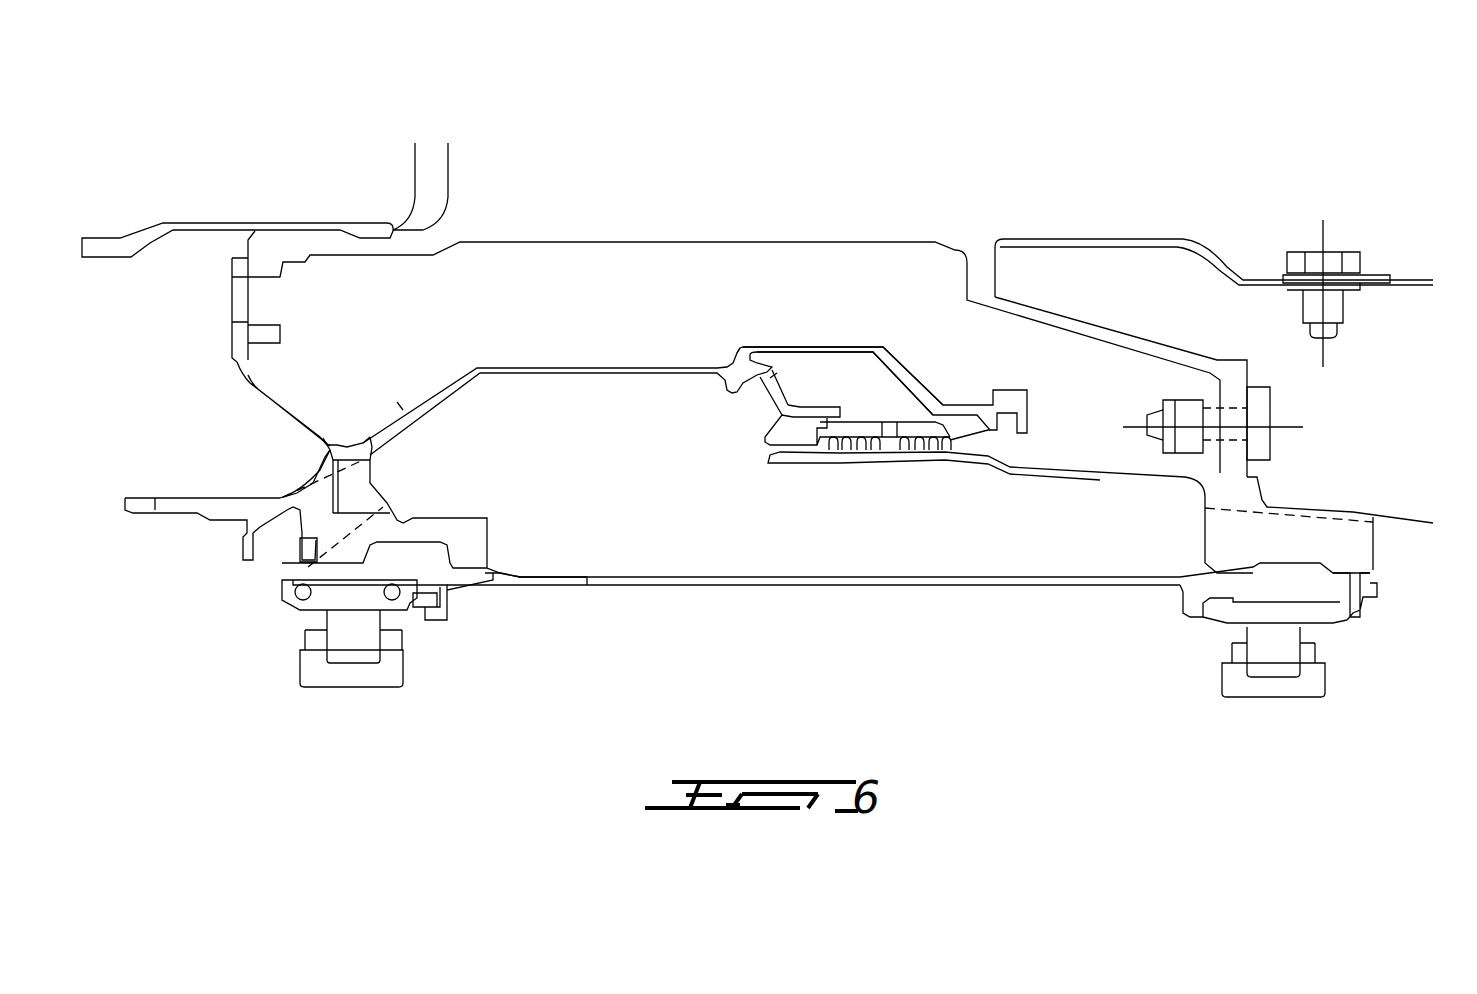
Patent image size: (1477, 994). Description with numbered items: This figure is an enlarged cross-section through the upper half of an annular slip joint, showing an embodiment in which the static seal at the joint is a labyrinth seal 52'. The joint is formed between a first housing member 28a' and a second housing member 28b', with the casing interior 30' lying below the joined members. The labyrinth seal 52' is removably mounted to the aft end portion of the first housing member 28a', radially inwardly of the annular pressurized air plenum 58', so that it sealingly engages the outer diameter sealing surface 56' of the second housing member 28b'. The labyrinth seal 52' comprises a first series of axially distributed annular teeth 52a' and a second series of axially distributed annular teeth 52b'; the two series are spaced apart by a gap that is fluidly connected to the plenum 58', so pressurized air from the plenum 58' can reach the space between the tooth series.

The first housing member 28a' is at (726, 377).
The second housing member 28b' is at (1146, 529).
The bypass duct / casing chamber 30' is at (596, 488).
The labyrinth seal 52' is at (889, 303).
The first series of axially distributed annular teeth 52a' is at (843, 570).
The second series of axially distributed annular teeth 52b' is at (943, 566).
The outer diameter sealing surface 56' is at (777, 561).
The annular pressurized air plenum 58' is at (840, 244).